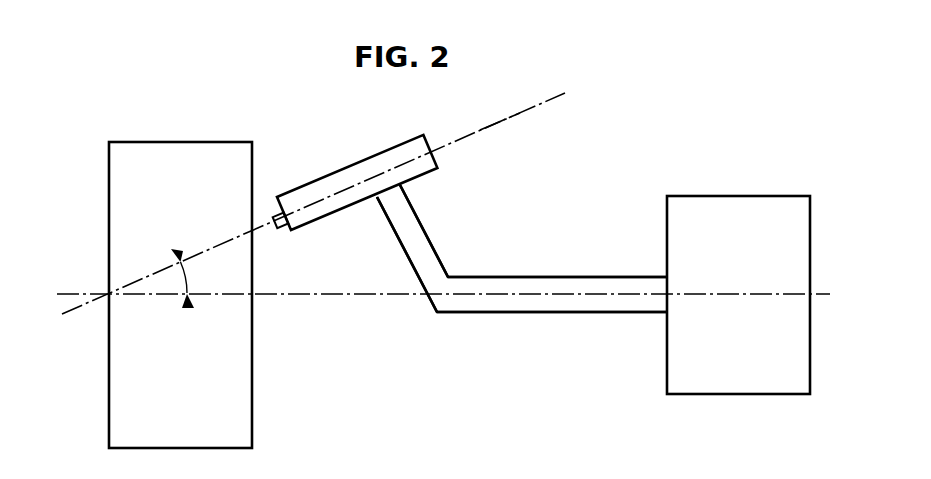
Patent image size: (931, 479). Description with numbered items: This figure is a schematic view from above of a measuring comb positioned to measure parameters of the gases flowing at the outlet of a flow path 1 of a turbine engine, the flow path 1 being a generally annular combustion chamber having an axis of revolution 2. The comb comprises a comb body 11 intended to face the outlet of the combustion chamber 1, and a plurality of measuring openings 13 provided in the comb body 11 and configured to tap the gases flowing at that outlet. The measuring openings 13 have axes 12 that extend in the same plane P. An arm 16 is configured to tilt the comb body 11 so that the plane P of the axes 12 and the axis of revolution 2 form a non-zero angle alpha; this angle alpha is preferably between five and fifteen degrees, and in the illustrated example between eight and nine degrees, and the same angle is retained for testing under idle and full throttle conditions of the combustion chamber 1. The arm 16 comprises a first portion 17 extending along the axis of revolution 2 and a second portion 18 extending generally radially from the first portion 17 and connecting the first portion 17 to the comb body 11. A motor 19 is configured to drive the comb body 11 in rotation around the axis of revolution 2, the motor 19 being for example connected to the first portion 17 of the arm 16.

The flow path 1 is at (260, 362).
The axis of revolution 2 is at (390, 296).
The comb body 11 is at (358, 177).
The axes 12 is at (500, 122).
The measuring openings 13 is at (271, 199).
The arm 16 is at (402, 261).
The first portion 17 is at (551, 312).
The second portion 18 is at (415, 238).
The motor 19 is at (737, 384).
The plane P is at (550, 99).
The angle alpha is at (187, 278).